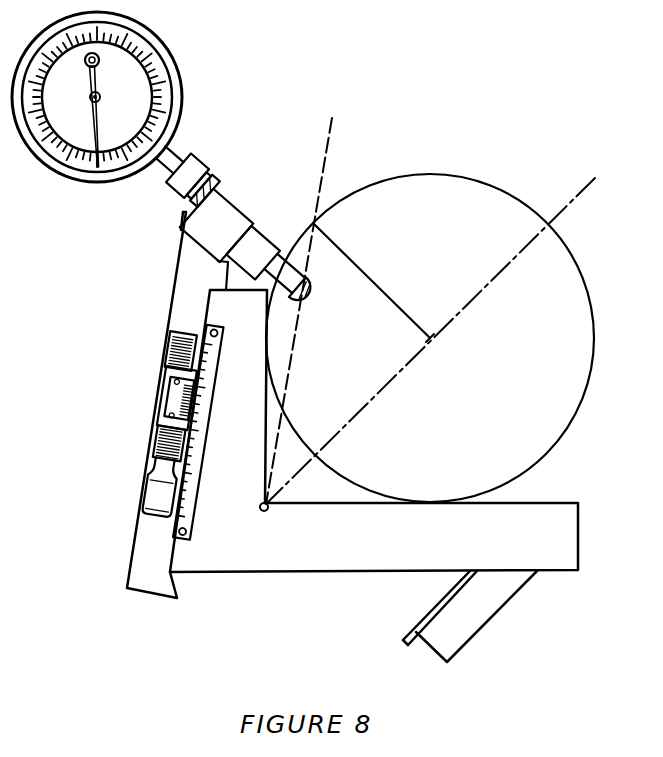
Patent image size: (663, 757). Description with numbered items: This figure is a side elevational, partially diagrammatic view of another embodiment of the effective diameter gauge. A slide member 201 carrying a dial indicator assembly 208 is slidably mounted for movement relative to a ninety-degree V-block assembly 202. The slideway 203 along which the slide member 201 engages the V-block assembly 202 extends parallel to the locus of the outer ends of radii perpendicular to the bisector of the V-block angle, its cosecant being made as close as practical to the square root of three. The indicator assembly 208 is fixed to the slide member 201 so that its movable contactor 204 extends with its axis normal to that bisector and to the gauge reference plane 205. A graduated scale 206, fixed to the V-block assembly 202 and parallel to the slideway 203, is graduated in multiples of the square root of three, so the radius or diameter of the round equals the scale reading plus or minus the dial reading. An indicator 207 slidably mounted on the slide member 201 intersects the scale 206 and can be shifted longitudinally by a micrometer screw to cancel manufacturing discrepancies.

The slide member 201 is at (158, 587).
The V-block assembly 202 is at (375, 562).
The slideway 203 is at (170, 553).
The movable contactor 204 is at (308, 308).
The gauge reference plane 205 is at (495, 622).
The graduated scale 206 is at (182, 517).
The indicator 207 is at (178, 401).
The dial indicator assembly 208 is at (92, 186).